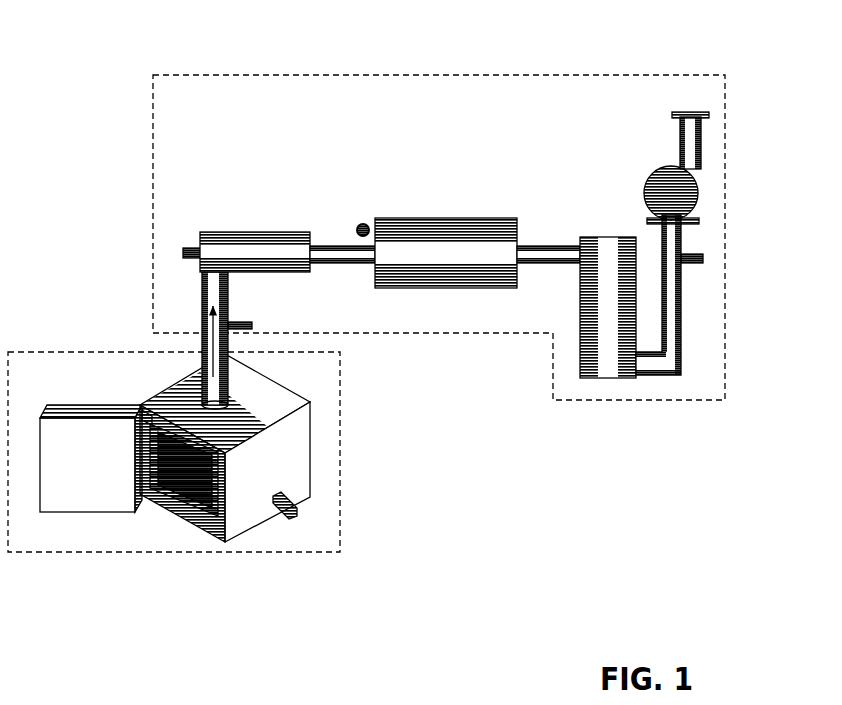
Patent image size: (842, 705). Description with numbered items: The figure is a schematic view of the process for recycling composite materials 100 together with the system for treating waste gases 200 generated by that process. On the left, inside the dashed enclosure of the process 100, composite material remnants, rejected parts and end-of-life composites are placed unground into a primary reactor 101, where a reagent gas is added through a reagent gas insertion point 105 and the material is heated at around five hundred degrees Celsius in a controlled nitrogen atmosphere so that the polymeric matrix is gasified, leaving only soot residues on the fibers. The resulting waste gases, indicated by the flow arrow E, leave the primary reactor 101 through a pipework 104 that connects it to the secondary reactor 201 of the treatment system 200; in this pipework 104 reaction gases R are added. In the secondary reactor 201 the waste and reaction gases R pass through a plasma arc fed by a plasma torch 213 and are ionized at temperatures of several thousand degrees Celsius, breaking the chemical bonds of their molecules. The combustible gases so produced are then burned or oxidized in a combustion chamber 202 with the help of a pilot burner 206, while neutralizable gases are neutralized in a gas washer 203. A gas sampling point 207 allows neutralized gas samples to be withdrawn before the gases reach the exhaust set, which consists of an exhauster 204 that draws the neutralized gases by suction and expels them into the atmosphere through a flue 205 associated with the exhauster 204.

The process for recycling composite materials 100 is at (60, 553).
The primary reactor 101 is at (236, 511).
The pipework 104 is at (201, 374).
The reagent gas insertion point 105 is at (299, 515).
The system for treating waste gases 200 is at (152, 176).
The secondary reactor 201 is at (252, 231).
The combustion chamber 202 is at (441, 217).
The gas washer 203 is at (578, 342).
The exhauster 204 is at (699, 198).
The flue 205 is at (693, 111).
The pilot burner 206 is at (363, 222).
The gas sampling point 207 is at (705, 259).
The plasma torch 213 is at (182, 253).
The exhaust flow E is at (195, 336).
The reaction gases R is at (256, 326).